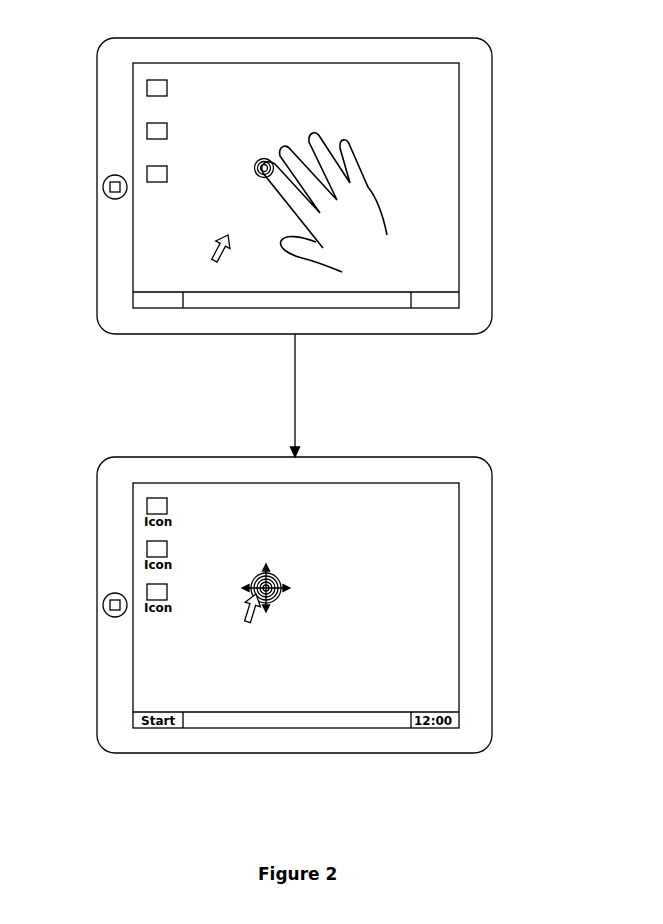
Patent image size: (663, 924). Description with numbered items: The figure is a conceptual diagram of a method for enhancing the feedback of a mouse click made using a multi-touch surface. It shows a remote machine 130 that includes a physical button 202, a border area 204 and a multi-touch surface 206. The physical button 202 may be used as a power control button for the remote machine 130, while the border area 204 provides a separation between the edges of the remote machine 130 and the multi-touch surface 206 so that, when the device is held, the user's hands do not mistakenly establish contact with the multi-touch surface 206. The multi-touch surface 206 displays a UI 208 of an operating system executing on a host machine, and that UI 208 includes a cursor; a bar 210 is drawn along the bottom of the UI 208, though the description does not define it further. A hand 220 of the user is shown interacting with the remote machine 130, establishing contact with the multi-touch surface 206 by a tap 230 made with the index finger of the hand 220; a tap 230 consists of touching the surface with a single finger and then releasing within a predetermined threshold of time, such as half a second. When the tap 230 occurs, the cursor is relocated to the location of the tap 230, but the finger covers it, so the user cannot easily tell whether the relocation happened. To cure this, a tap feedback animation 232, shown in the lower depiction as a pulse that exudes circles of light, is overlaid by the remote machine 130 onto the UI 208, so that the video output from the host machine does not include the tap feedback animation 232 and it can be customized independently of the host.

The remote machine 130 is at (98, 157).
The physical button 202 is at (103, 187).
The border area 204 is at (292, 50).
The multi-touch surface 206 is at (459, 185).
The UI 208 is at (438, 233).
The taskbar 210 is at (455, 303).
The hand 220 is at (368, 187).
The tap 230 is at (261, 163).
The tap feedback animation 232 is at (281, 581).